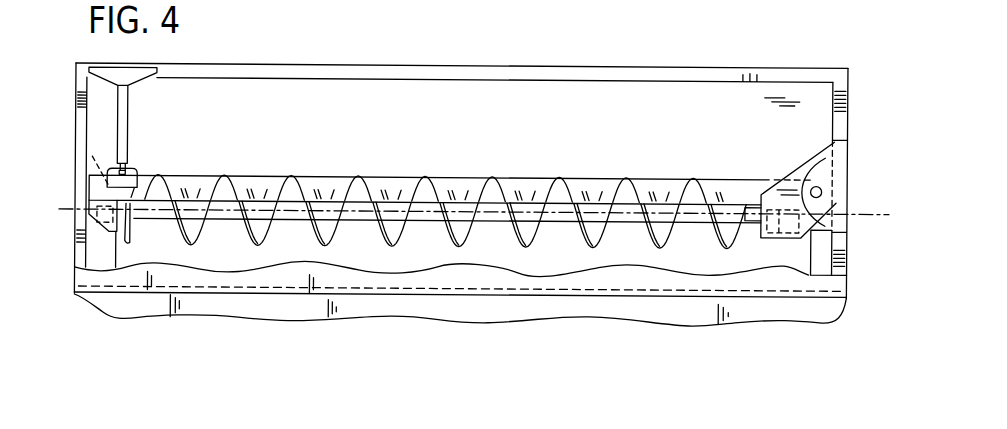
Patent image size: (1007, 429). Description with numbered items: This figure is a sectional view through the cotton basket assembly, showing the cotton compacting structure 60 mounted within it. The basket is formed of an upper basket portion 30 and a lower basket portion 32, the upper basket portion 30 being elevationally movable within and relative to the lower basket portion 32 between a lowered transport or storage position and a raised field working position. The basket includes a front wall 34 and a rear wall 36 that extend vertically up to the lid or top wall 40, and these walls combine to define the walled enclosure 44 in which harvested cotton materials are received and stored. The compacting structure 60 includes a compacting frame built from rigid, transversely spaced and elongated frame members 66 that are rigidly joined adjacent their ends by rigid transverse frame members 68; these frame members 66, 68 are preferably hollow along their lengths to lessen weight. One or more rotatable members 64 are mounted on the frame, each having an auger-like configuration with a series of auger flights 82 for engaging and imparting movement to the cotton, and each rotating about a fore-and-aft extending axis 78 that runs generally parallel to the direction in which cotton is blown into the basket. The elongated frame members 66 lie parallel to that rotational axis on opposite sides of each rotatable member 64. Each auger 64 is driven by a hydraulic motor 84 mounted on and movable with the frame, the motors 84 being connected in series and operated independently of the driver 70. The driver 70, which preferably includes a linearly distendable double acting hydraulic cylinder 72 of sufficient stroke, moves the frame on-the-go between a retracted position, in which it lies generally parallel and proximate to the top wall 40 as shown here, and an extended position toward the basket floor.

The upper basket portion 30 is at (70, 126).
The lower basket portion 32 is at (131, 312).
The front wall 34 is at (75, 278).
The rear wall 36 is at (847, 122).
The top wall 40 is at (565, 72).
The walled enclosure 44 is at (810, 252).
The cotton compacting structure 60 is at (474, 197).
The rotatable member 64 is at (444, 247).
The elongated frame member 66 is at (255, 182).
The transverse frame member 68 is at (88, 153).
The driver 70 is at (137, 148).
The double acting hydraulic cylinder 72 is at (124, 108).
The fore-and-aft extending axis 78 is at (865, 198).
The auger flights 82 is at (535, 234).
The hydraulic motor 84 is at (795, 235).